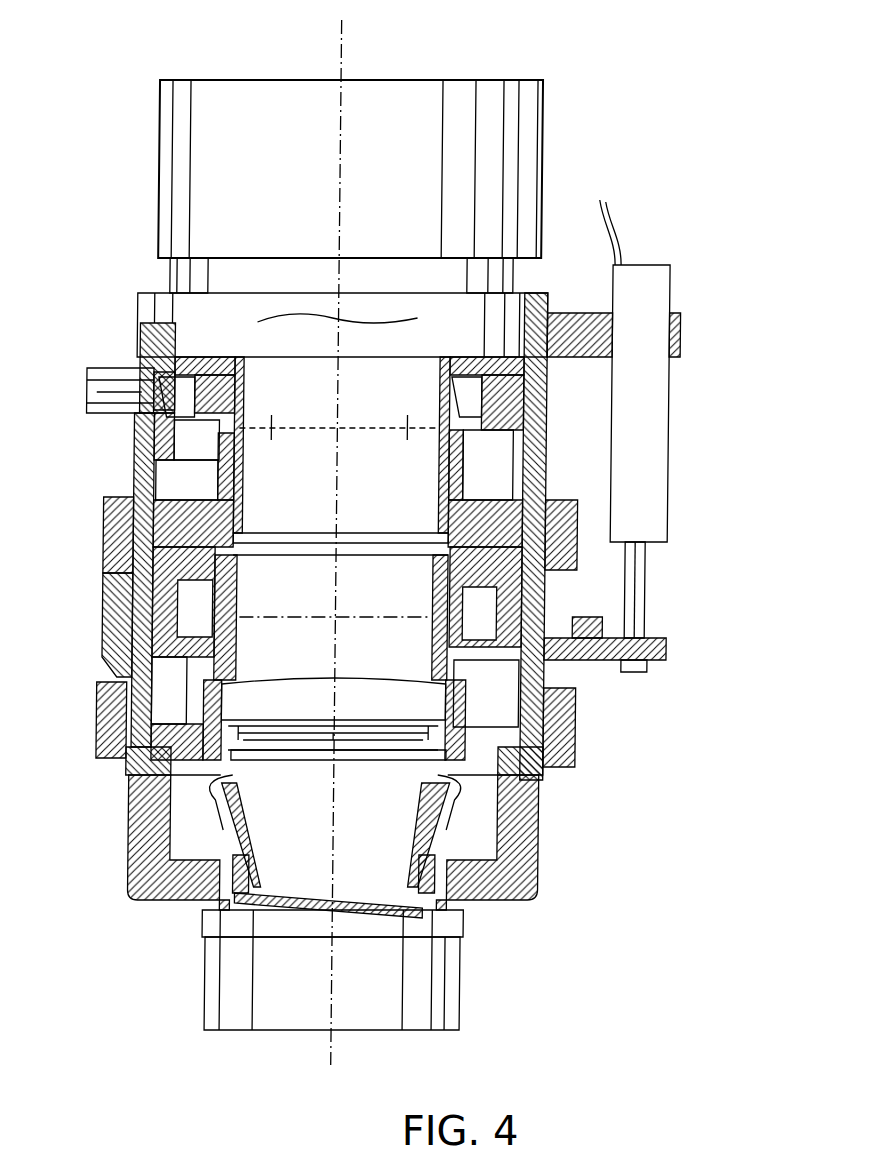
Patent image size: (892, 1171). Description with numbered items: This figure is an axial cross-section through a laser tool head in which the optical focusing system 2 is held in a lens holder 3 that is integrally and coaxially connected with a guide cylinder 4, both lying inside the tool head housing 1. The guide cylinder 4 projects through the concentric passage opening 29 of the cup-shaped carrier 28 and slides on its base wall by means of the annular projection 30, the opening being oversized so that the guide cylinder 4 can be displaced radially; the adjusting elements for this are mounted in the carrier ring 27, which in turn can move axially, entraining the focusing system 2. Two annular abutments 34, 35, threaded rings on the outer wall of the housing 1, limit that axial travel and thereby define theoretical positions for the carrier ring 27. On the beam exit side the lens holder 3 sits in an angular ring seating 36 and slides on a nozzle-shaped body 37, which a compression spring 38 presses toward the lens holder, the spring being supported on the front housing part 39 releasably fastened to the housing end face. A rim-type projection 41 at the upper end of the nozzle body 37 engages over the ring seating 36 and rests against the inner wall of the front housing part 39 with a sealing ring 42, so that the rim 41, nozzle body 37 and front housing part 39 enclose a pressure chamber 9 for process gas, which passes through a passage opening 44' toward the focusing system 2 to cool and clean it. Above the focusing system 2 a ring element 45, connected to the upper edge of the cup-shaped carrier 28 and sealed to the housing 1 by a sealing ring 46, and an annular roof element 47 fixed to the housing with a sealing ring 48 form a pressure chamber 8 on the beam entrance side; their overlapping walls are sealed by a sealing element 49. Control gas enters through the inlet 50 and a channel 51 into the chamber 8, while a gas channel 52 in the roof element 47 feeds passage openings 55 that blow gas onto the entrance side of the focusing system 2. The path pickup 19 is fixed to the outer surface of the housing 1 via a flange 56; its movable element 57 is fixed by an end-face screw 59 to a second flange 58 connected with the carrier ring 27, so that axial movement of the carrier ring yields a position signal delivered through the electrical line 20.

The tool head housing 1 is at (160, 335).
The optical focusing system 2 is at (268, 700).
The lens holder 3 is at (210, 705).
The guide cylinder 4 is at (220, 668).
The pressure chamber 8 is at (180, 485).
The pressure chamber 9 is at (165, 805).
The path pickup 19 is at (650, 462).
The electrical line 20 is at (608, 225).
The carrier ring 27 is at (115, 605).
The cup-shaped carrier 28 is at (520, 645).
The passage opening 29 is at (480, 662).
The projection 30 is at (235, 620).
The annular abutment 34 is at (115, 540).
The annular abutment 35 is at (110, 740).
The angular ring seating 36 is at (420, 795).
The nozzle-shaped body 37 is at (245, 845).
The compression spring 38 is at (318, 905).
The front housing part 39 is at (467, 958).
The rim-type projection 41 is at (240, 798).
The sealing ring 42 is at (540, 768).
The passage opening 44' is at (404, 838).
The ring element 45 is at (222, 520).
The sealing ring 46 is at (538, 505).
The annular roof element 47 is at (512, 415).
The sealing ring 48 is at (515, 462).
The sealing element 49 is at (225, 445).
The inlet 50 is at (100, 400).
The channel 51 is at (178, 400).
The gas channel 52 is at (458, 395).
The passage openings 55 is at (406, 428).
The flange 56 is at (680, 335).
The movable element 57 is at (640, 592).
The second flange 58 is at (668, 650).
The end-face screw 59 is at (648, 668).